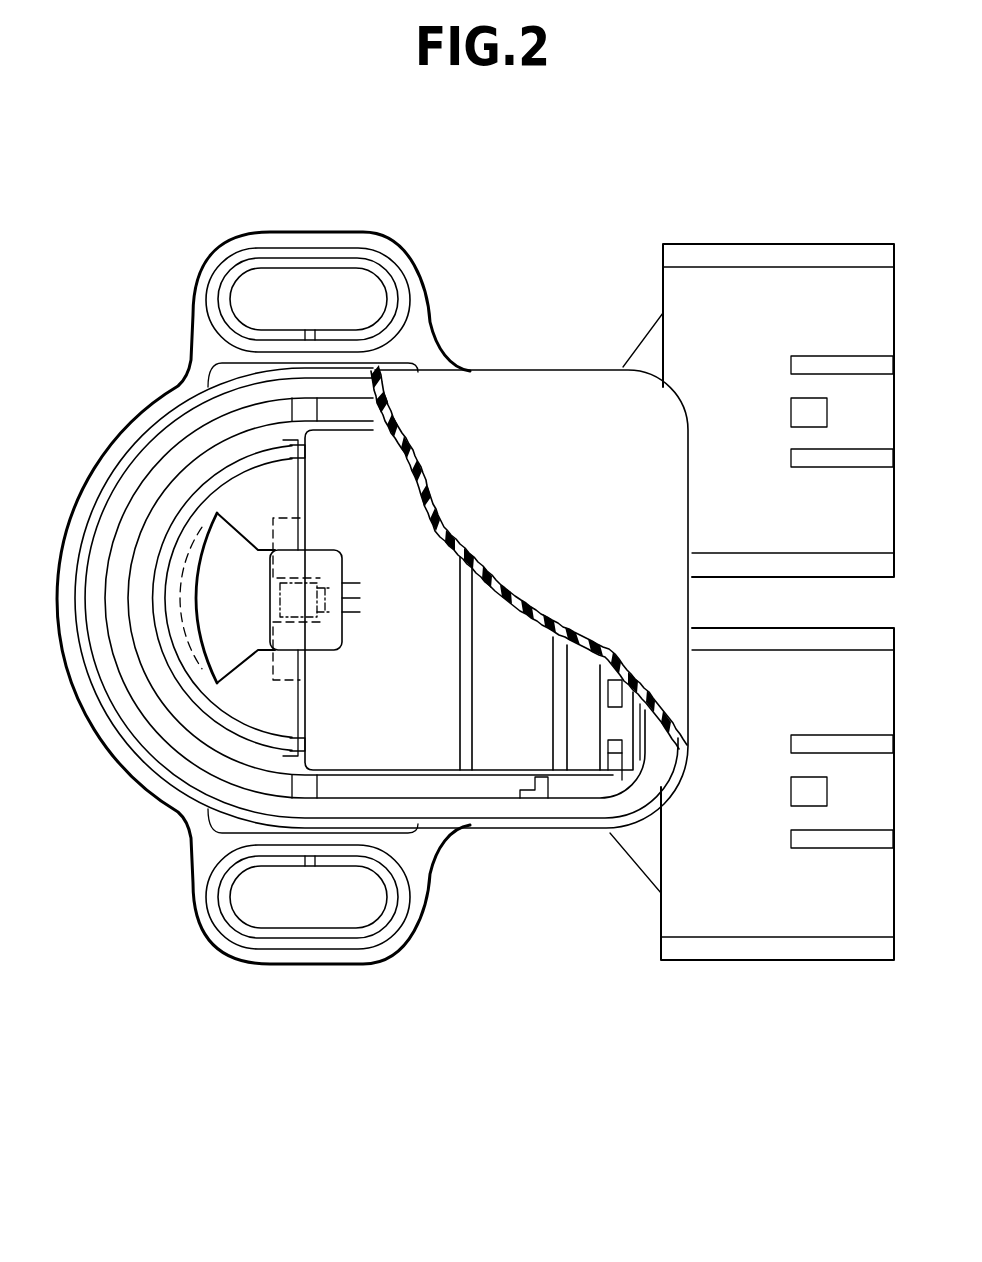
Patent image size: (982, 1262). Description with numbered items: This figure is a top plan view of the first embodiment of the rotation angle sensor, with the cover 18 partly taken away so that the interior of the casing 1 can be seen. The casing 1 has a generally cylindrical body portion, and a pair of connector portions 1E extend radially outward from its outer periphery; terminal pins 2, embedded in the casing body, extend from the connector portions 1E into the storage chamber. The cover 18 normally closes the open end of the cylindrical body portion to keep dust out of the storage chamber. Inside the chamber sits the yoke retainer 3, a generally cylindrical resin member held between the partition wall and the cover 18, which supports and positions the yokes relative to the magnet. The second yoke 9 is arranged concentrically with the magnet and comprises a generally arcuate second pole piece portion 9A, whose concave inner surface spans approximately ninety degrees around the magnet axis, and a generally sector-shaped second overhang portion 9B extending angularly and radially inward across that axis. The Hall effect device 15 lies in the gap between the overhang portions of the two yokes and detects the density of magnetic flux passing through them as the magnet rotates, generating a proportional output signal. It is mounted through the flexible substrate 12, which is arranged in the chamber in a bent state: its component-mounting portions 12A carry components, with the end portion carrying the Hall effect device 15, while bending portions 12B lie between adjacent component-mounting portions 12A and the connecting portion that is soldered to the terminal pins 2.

The casing 1 is at (485, 365).
The connector portions 1E is at (755, 283).
The terminal pins 2 is at (615, 757).
The yoke retainer 3 is at (247, 715).
The second yoke 9 is at (217, 637).
The second pole piece portion 9A is at (197, 557).
The second overhang portion 9B is at (240, 552).
The flexible substrate 12 is at (510, 750).
The component-mounting portions 12A is at (583, 757).
The bending portions 12B is at (463, 740).
The Hall effect device 15 is at (307, 613).
The cover 18 is at (559, 398).